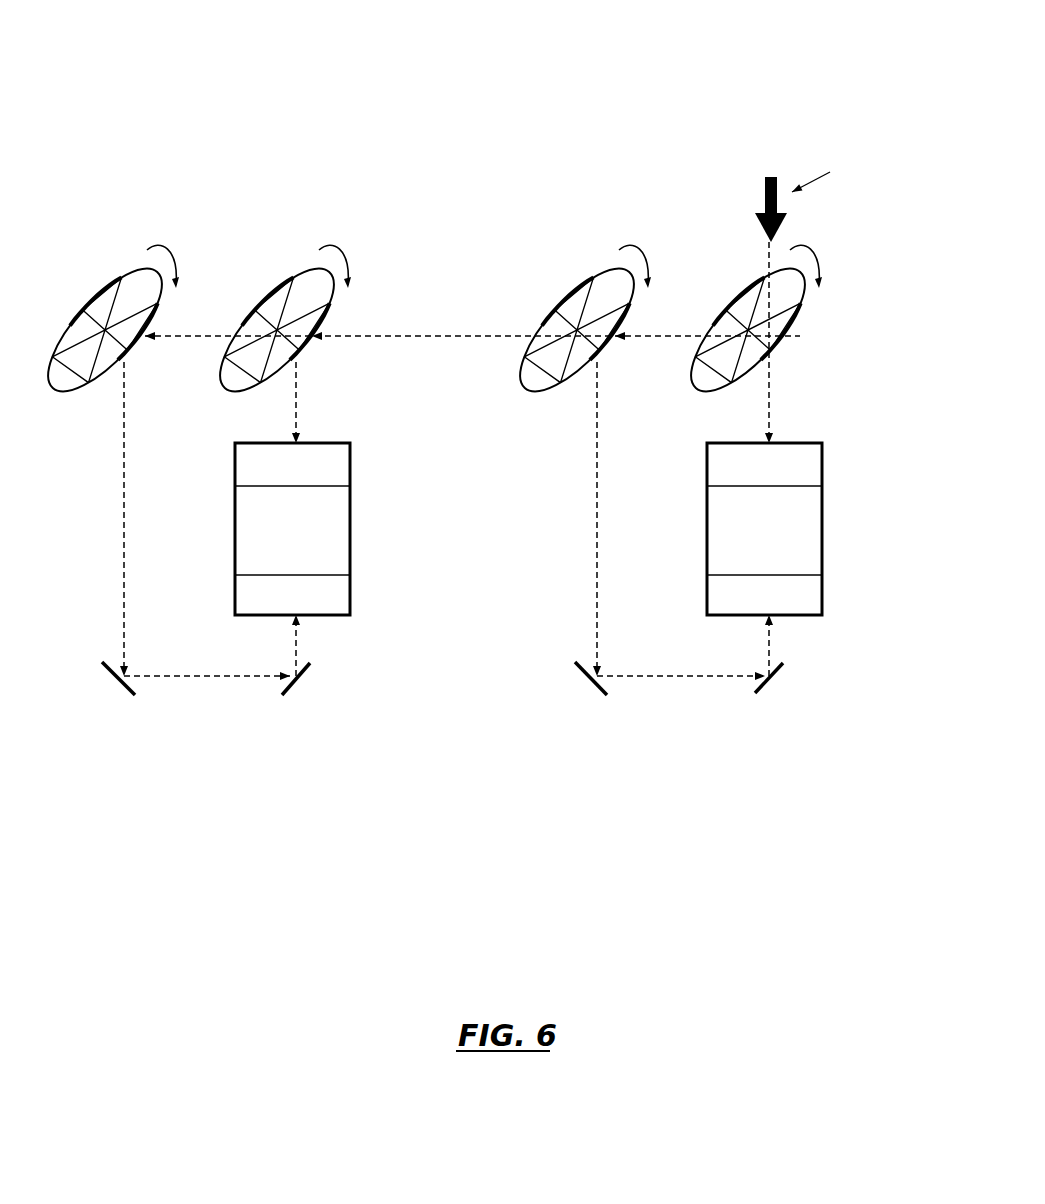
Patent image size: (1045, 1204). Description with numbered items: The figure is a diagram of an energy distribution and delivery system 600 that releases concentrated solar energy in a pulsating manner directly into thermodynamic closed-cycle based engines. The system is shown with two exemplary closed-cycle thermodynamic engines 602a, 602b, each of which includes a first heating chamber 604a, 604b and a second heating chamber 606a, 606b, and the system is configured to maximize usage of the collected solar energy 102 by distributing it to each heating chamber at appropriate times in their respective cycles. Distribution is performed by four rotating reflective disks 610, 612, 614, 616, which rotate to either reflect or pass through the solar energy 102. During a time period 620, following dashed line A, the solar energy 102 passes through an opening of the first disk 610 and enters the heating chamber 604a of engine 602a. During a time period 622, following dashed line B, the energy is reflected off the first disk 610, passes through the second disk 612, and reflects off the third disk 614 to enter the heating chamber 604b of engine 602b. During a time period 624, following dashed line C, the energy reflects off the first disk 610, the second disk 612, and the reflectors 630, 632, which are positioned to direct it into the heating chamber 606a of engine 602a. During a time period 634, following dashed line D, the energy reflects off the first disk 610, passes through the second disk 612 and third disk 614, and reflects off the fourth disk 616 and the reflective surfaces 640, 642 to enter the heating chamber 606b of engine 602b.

The energy distribution and delivery system 600 is at (593, 72).
The collected solar energy 102 is at (808, 153).
The first disk 610 is at (760, 273).
The second disk 612 is at (603, 268).
The third disk 614 is at (307, 267).
The fourth disk 616 is at (130, 268).
The time period 620 is at (777, 375).
The time period 622 is at (320, 393).
The time period 624 is at (608, 497).
The time period 634 is at (133, 498).
The closed-cycle thermodynamic engine 602a is at (797, 443).
The first heating chamber 604a is at (807, 477).
The second heating chamber 606a is at (807, 598).
The closed-cycle thermodynamic engine 602b is at (327, 443).
The first heating chamber 604b is at (325, 477).
The second heating chamber 606b is at (325, 598).
The reflector 630 is at (595, 680).
The reflector 632 is at (770, 682).
The reflective surface 640 is at (120, 682).
The reflective surface 642 is at (297, 682).